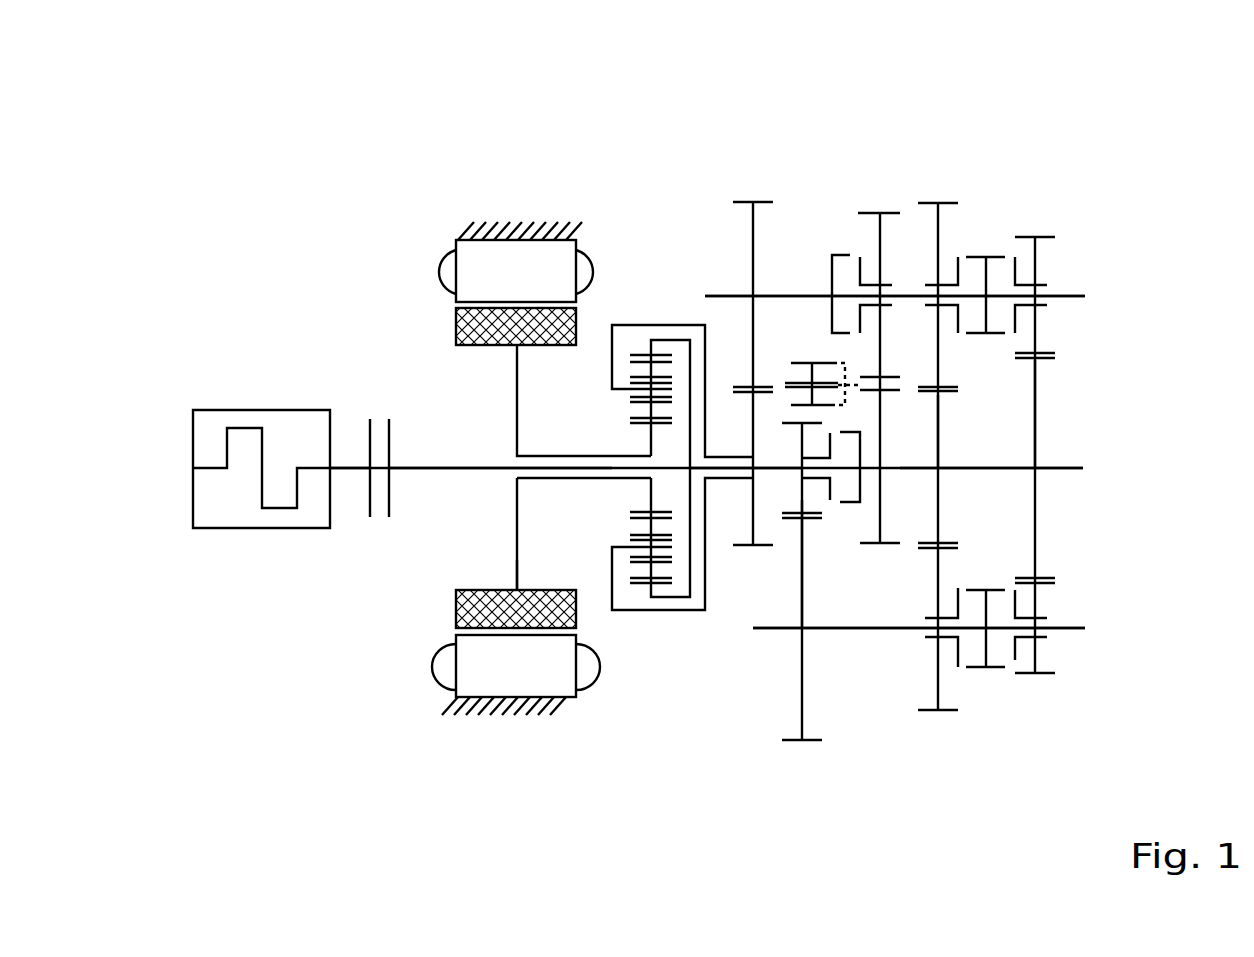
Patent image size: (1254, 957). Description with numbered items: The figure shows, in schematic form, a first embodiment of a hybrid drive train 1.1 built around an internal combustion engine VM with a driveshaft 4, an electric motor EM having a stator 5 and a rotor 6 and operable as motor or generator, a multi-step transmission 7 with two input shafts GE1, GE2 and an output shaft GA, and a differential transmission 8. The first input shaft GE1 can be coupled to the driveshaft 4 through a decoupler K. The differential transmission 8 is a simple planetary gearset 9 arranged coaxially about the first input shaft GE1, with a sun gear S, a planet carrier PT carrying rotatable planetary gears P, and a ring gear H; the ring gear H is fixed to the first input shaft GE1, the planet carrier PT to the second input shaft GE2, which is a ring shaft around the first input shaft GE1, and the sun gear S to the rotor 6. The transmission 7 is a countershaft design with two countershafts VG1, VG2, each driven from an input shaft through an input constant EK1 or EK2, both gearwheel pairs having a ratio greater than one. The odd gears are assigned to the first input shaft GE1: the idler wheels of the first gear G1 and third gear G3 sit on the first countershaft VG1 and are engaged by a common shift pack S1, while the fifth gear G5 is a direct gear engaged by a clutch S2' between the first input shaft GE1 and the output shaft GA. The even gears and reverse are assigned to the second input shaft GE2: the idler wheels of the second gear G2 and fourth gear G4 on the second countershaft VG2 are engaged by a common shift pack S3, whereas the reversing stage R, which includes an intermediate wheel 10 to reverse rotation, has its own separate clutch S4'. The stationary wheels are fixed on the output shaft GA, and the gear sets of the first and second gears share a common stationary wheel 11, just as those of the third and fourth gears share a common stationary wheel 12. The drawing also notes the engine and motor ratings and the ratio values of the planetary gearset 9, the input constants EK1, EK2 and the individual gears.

The internal combustion engine VM is at (230, 487).
The decoupler K is at (380, 525).
The driveshaft 4 is at (352, 467).
The first input shaft GE1 is at (438, 467).
The electric motor EM is at (413, 262).
The stator 5 is at (473, 278).
The rotor 6 is at (473, 329).
The hybrid drive train 1.1 is at (395, 628).
The planet carrier PT is at (612, 347).
The differential transmission 8 is at (658, 638).
The planetary gearset 9 is at (670, 555).
The sun gear S is at (643, 493).
The planetary gears P is at (643, 525).
The ring gear H is at (680, 596).
The second input shaft GE2 is at (713, 478).
The second input constant EK2 is at (755, 168).
The multi-step transmission 7 is at (720, 262).
The intermediate wheel 10 is at (810, 363).
The clutch of the reversing stage S4' is at (856, 204).
The reversing stage R is at (880, 170).
The fourth gear G4 is at (940, 160).
The third gear G3 is at (940, 750).
The common shift pack S3 is at (988, 342).
The common shift pack S1 is at (987, 578).
The second gear G2 is at (1037, 194).
The first gear G1 is at (1038, 714).
The common stationary wheel 11 is at (1037, 395).
The common stationary wheel 12 is at (940, 427).
The output shaft GA is at (1060, 468).
The second countershaft VG2 is at (1068, 294).
The first countershaft VG1 is at (1063, 627).
The first input constant EK1 is at (790, 658).
The fifth gear G5 is at (838, 545).
The clutch S2' is at (869, 640).